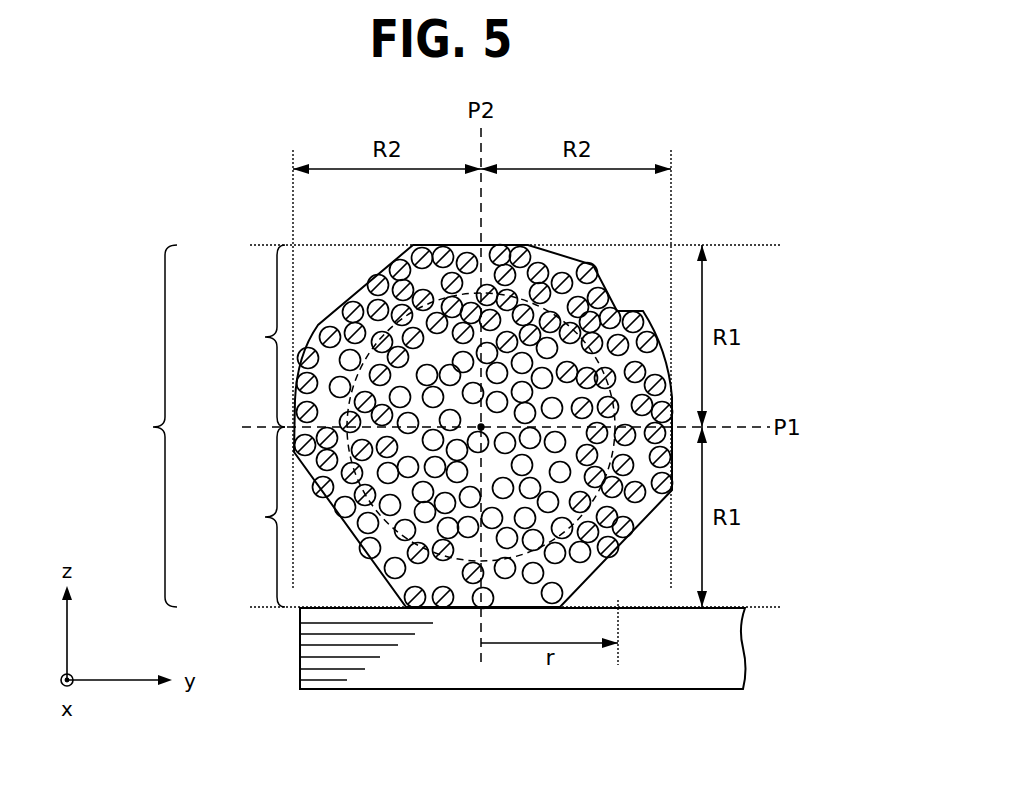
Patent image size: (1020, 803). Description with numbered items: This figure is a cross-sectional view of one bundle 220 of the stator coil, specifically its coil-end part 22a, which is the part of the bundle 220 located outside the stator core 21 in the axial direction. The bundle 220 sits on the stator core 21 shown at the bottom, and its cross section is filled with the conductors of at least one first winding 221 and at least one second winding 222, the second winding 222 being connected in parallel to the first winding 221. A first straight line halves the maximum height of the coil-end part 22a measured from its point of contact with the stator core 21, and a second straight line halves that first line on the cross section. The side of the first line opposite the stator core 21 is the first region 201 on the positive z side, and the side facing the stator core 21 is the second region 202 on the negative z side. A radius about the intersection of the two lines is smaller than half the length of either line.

The bundle 220 is at (388, 238).
The first winding 221 is at (543, 378).
The second winding 222 is at (340, 385).
The first region 201 is at (330, 403).
The second region 202 is at (330, 455).
The coil-end part 22a is at (139, 426).
The stator core 21 is at (697, 655).